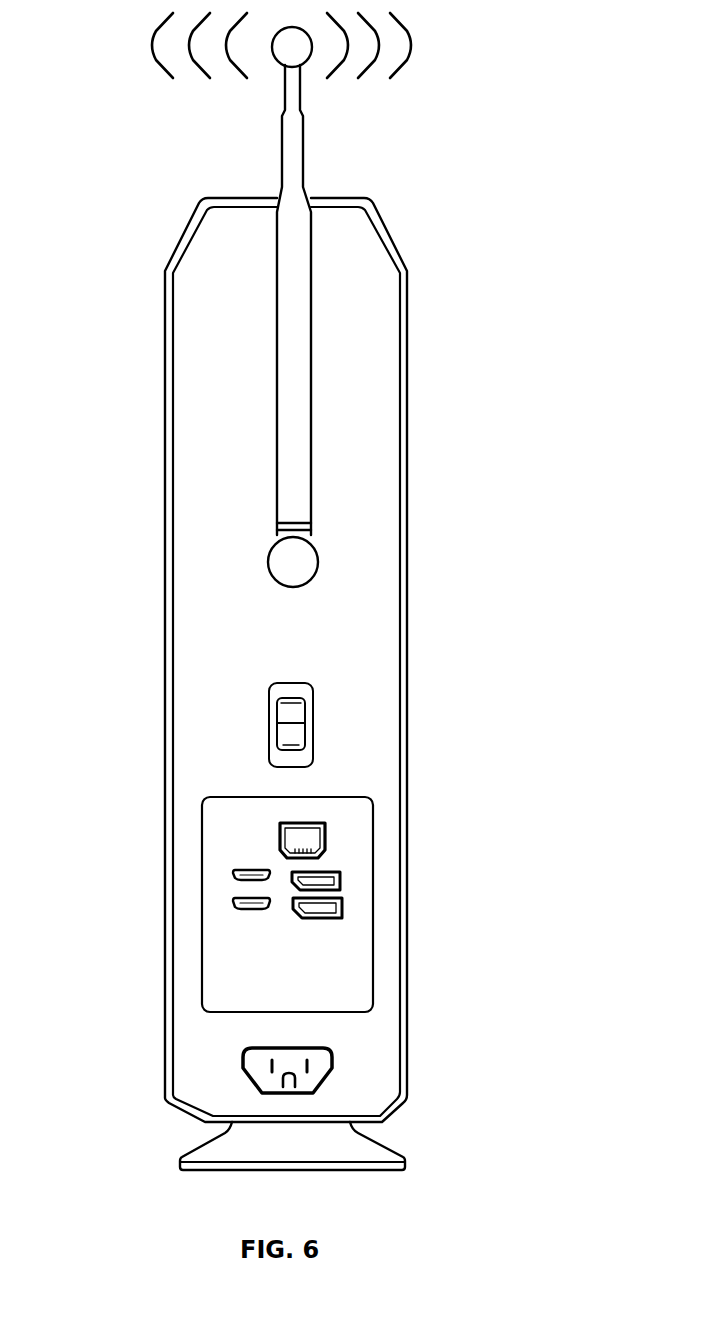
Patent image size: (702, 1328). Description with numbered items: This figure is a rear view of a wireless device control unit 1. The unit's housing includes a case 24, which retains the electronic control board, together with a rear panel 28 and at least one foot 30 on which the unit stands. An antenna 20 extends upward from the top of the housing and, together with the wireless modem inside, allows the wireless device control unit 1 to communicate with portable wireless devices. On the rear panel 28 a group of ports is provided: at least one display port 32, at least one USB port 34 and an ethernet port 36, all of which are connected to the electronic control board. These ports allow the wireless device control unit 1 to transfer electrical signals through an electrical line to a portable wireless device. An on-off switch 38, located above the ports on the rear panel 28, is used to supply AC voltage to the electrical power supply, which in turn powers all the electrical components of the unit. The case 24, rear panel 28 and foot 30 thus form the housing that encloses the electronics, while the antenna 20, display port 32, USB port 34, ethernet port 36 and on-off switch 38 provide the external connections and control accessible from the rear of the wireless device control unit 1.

The wireless device control unit 1 is at (304, 591).
The antenna 20 is at (298, 407).
The case 24 is at (165, 598).
The rear panel 28 is at (188, 375).
The foot 30 is at (385, 1145).
The display port 32 is at (340, 880).
The USB port 34 is at (237, 873).
The ethernet port 36 is at (325, 828).
The on-off switch 38 is at (315, 685).